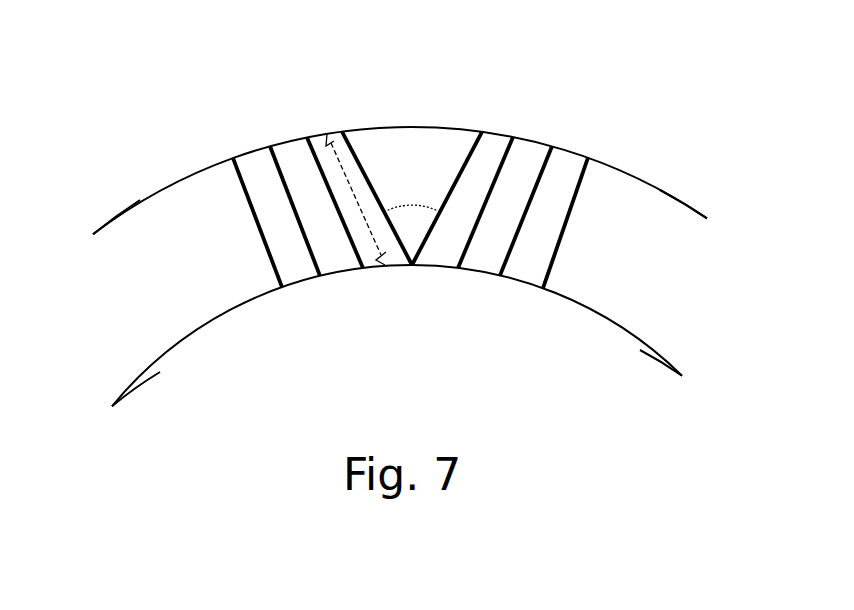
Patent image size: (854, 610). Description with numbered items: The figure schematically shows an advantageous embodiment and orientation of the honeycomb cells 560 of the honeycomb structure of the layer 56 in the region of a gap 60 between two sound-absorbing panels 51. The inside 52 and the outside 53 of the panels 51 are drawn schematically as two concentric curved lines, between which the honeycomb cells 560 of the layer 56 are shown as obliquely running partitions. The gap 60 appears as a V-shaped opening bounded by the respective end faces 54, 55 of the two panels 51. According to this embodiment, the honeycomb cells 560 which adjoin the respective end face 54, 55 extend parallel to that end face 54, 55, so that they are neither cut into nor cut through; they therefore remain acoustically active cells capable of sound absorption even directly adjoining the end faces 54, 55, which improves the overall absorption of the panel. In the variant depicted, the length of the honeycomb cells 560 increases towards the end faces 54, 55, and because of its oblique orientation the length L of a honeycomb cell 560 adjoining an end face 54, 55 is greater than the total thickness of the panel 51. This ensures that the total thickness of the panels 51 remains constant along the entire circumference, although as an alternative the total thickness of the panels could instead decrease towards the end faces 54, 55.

The panel 51 is at (125, 375).
The inside 52 is at (188, 340).
The outside 53 is at (158, 190).
The end face 54 is at (468, 145).
The end face 55 is at (352, 147).
The layer 56 is at (128, 235).
The honeycomb cell 560 is at (313, 150).
The gap 60 is at (415, 173).
The length of honeycomb cell L is at (373, 262).